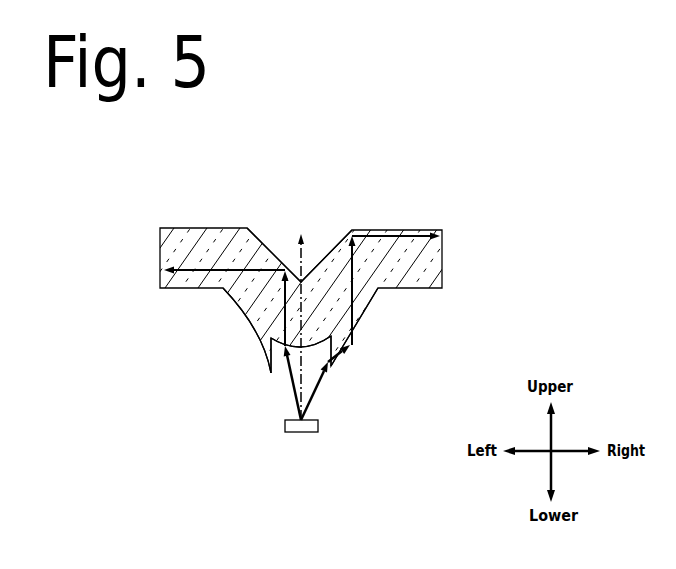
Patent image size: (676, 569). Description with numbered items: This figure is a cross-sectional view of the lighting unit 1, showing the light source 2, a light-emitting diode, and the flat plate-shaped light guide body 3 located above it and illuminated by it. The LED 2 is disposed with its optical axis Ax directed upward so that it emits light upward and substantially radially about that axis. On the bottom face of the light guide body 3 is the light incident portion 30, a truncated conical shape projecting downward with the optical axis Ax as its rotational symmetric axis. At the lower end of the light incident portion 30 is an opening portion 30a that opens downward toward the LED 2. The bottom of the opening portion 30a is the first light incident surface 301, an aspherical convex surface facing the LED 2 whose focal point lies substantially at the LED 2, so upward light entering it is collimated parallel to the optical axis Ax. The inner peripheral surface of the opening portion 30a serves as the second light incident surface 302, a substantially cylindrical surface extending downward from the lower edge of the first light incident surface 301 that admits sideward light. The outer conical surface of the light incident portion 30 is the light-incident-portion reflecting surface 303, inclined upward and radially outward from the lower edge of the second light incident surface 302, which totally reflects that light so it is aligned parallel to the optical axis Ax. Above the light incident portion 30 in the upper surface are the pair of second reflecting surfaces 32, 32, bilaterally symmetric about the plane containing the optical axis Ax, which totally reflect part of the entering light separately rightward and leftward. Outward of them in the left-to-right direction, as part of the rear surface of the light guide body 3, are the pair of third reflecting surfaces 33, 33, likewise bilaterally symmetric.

The lighting unit 1 is at (114, 161).
The light source 2 is at (313, 433).
The light guide body 3 is at (203, 228).
The light incident portion 30 is at (245, 371).
The opening portion 30a is at (293, 348).
The first light incident surface 301 is at (282, 342).
The second light incident surface 302 is at (331, 368).
The light-incident-portion reflecting surface 303 is at (358, 320).
The second reflecting surfaces 32 is at (340, 243).
The third reflecting surfaces 33 is at (160, 240).